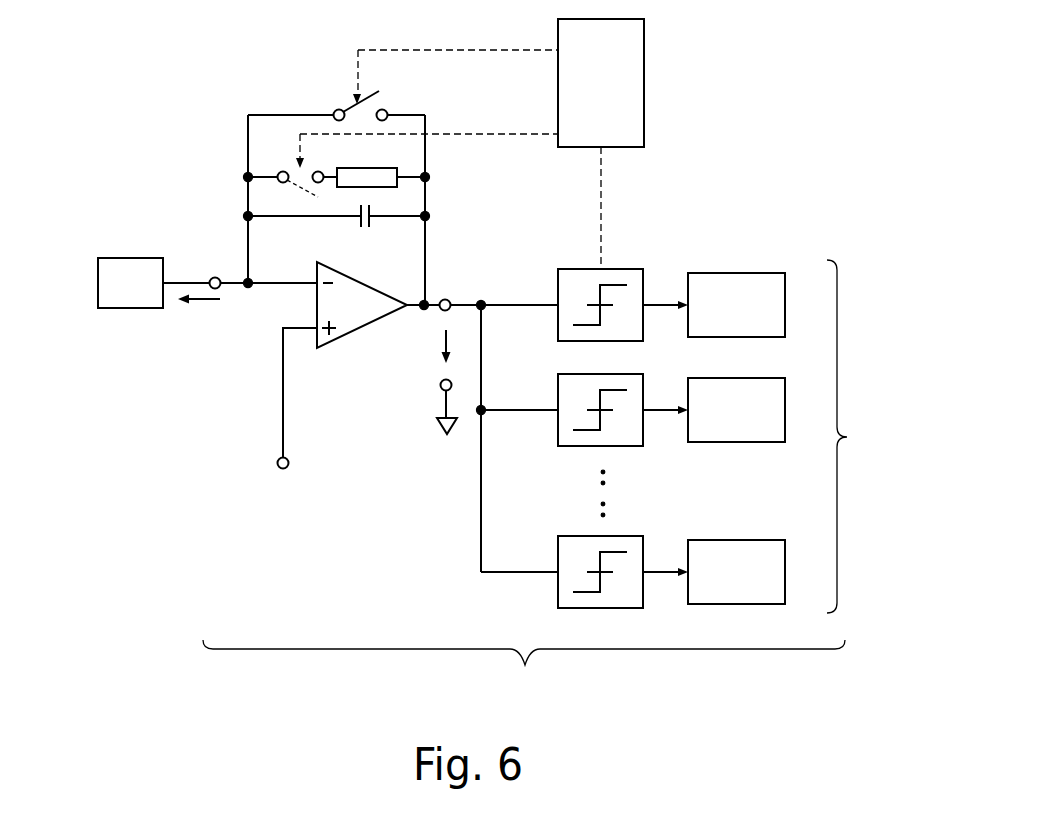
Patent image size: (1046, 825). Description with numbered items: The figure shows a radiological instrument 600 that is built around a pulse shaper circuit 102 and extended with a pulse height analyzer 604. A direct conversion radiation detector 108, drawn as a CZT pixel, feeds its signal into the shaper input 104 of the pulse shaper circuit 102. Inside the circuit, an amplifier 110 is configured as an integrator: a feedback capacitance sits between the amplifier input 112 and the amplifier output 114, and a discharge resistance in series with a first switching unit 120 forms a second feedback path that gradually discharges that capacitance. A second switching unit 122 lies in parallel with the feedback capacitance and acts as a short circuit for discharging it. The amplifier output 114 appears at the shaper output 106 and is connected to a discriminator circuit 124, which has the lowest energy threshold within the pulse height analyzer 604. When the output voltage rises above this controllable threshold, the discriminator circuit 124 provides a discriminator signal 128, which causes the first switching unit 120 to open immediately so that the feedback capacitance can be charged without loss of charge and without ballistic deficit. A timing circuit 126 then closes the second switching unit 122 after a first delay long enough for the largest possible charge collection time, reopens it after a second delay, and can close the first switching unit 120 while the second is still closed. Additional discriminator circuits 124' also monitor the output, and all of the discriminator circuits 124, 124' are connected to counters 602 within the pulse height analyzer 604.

The pulse shaper circuit 102 is at (215, 477).
The shaper input 104 is at (212, 274).
The shaper output 106 is at (447, 298).
The direct conversion radiation detector 108 is at (130, 308).
The amplifier 110 is at (345, 272).
The amplifier input 112 is at (316, 278).
The amplifier output 114 is at (405, 312).
The first switching unit 120 is at (290, 168).
The second switching unit 122 is at (374, 103).
The discriminator circuit 124 is at (588, 324).
The additional discriminator circuits 124' is at (577, 497).
The timing circuit 126 is at (644, 60).
The discriminator signal 128 is at (601, 190).
The radiological instrument 600 is at (524, 669).
The counters 602 is at (747, 273).
The pulse height analyzer 604 is at (865, 436).